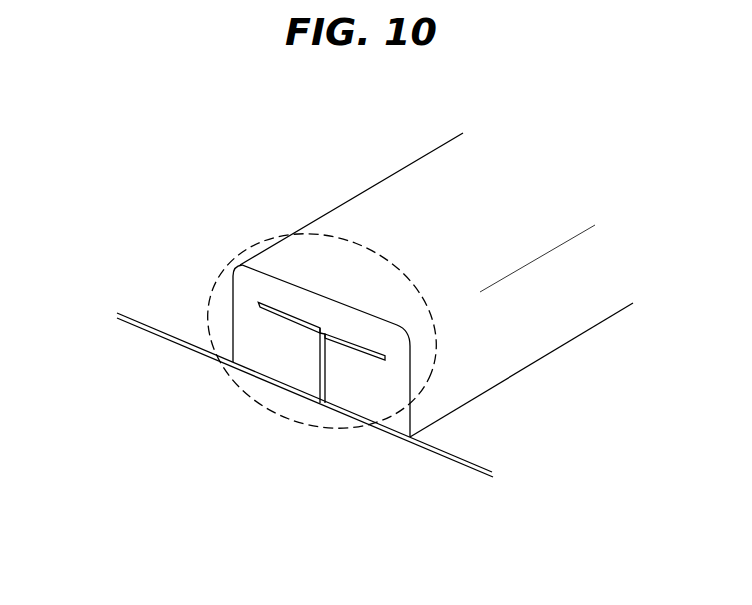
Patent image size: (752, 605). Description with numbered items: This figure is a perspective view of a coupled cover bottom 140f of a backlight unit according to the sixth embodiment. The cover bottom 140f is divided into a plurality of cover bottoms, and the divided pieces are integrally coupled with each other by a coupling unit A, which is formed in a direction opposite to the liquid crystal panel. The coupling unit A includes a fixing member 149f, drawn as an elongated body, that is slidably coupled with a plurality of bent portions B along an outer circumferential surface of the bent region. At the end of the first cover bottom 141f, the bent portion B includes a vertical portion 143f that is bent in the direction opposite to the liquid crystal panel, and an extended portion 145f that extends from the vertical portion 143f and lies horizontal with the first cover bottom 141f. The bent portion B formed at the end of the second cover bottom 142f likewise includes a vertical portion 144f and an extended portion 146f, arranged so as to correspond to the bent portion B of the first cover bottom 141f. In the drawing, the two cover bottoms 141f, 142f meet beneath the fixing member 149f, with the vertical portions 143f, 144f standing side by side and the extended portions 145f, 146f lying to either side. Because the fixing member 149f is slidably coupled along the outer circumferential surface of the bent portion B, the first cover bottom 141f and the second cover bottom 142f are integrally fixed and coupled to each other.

The cover bottom 140f is at (188, 150).
The fixing member 149f is at (387, 213).
The first cover bottom 141f is at (163, 339).
The second cover bottom 142f is at (461, 464).
The vertical portion 143f is at (317, 340).
The vertical portion 144f is at (326, 360).
The extended portion 145f is at (283, 317).
The extended portion 146f is at (370, 352).
The coupling unit A is at (241, 252).
The bent portion B is at (218, 455).